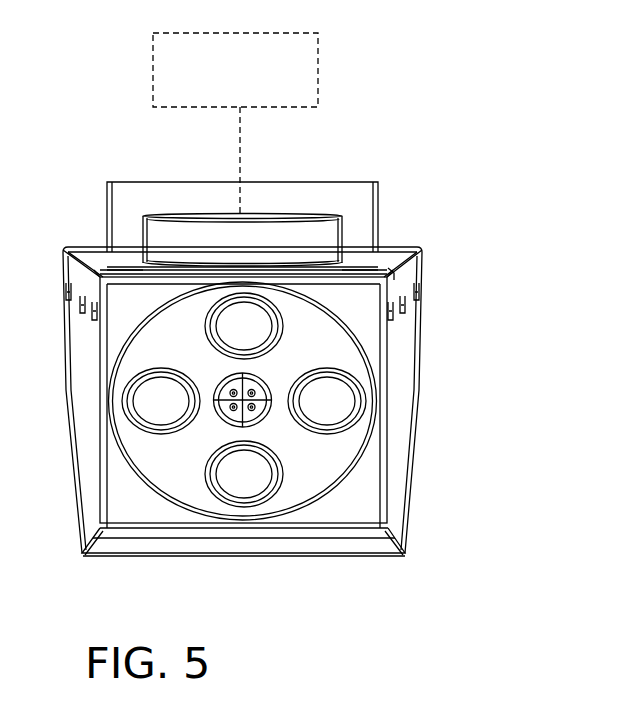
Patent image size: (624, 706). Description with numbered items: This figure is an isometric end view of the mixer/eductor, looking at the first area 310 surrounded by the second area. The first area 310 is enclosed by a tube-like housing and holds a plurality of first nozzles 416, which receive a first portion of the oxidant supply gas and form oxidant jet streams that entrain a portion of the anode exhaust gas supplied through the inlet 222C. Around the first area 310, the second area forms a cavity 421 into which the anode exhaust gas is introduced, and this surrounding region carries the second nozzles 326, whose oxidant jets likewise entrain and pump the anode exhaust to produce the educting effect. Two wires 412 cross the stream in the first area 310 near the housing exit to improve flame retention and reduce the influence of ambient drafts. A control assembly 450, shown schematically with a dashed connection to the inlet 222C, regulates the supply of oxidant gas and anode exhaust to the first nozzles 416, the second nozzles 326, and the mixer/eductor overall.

The control assembly 450 is at (318, 65).
The inlet 222C is at (293, 220).
The wires 412 is at (243, 420).
The cavity 421 is at (302, 349).
The first area 310 is at (263, 395).
The first nozzles 416 is at (257, 408).
The second nozzles 326 is at (160, 417).